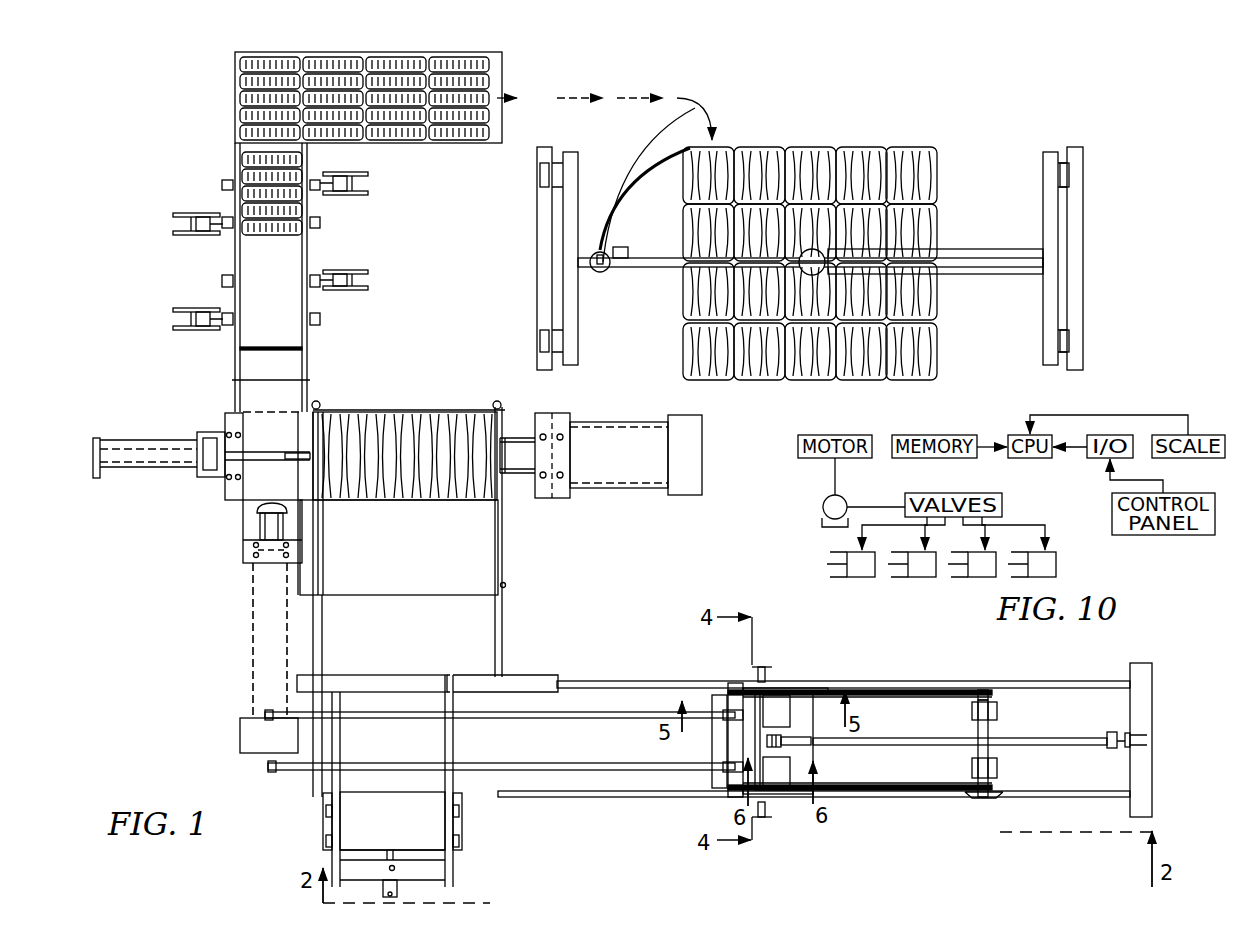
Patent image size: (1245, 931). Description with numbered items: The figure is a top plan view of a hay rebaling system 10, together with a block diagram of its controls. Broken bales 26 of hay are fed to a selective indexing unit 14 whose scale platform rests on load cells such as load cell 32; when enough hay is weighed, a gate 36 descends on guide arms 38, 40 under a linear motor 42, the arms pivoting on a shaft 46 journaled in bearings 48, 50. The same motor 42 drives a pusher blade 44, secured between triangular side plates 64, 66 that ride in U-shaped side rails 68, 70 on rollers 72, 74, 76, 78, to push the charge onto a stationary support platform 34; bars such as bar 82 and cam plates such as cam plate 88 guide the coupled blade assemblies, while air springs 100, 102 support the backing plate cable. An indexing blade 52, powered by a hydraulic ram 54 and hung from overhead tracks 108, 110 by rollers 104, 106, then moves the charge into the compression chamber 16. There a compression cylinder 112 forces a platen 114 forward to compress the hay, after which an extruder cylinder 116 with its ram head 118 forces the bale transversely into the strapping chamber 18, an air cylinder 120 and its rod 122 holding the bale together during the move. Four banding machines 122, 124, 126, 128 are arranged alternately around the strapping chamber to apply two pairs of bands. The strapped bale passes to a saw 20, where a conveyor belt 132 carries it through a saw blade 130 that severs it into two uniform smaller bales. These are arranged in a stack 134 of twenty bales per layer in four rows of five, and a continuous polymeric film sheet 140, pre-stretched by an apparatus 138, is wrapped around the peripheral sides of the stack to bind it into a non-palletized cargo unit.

The hay rebaling system 10 is at (650, 570).
The selective indexing unit 14 is at (651, 680).
The compression chamber 16 is at (363, 404).
The strapping chamber 18 is at (346, 305).
The saw 20 is at (432, 157).
The bales of hay 26 is at (426, 410).
The load cell 32 is at (527, 263).
The stationary horizontal support platform 34 is at (482, 640).
The gate 36 is at (768, 717).
The guide arm 38 is at (878, 698).
The guide arm 40 is at (855, 786).
The linear motor 42 is at (912, 738).
The pusher blade 44 is at (775, 716).
The shaft 46 is at (990, 730).
The bearing 48 is at (997, 711).
The bearing 50 is at (997, 767).
The indexing blade 52 is at (370, 792).
The hydraulic ram 54 is at (398, 891).
The side plate 64 is at (895, 690).
The side plate 66 is at (900, 798).
The U-shaped side rail 68 is at (580, 683).
The U-shaped side rail 70 is at (600, 797).
The roller 72 is at (803, 690).
The roller 74 is at (984, 690).
The roller 76 is at (802, 800).
The roller 78 is at (985, 800).
The bar 82 is at (778, 682).
The cam plate 88 is at (780, 802).
The air spring 100 is at (580, 763).
The air spring 102 is at (590, 716).
The roller 104 is at (323, 840).
The roller 106 is at (463, 840).
The overhead track 108 is at (340, 738).
The overhead track 110 is at (445, 743).
The compression cylinder 112 is at (616, 470).
The platen 114 is at (500, 483).
The extruder cylinder 116 is at (262, 621).
The ram head 118 is at (252, 506).
The air cylinder 120 is at (148, 446).
The rod 122 is at (191, 322).
The banding machine 124 is at (350, 282).
The banding machine 126 is at (191, 226).
The banding machine 128 is at (350, 186).
The saw blade 130 is at (492, 95).
The conveyor belt 132 is at (355, 146).
The stack 134 is at (891, 124).
The pre-stretching apparatus 138 is at (613, 283).
The continuous film sheet 140 is at (633, 183).